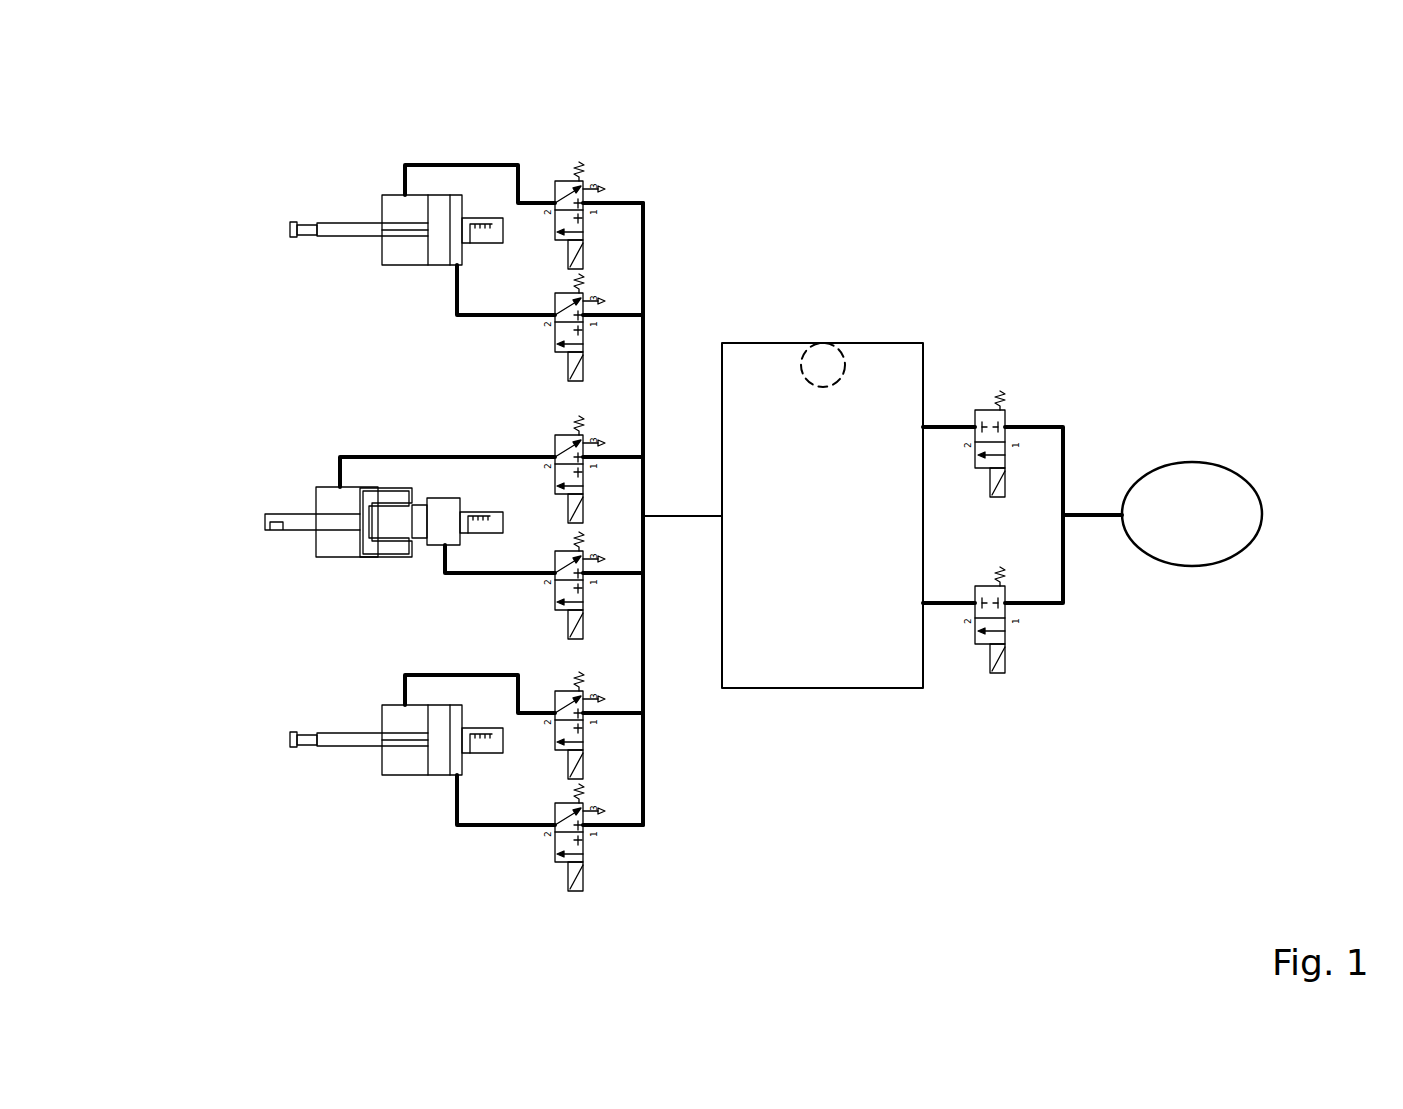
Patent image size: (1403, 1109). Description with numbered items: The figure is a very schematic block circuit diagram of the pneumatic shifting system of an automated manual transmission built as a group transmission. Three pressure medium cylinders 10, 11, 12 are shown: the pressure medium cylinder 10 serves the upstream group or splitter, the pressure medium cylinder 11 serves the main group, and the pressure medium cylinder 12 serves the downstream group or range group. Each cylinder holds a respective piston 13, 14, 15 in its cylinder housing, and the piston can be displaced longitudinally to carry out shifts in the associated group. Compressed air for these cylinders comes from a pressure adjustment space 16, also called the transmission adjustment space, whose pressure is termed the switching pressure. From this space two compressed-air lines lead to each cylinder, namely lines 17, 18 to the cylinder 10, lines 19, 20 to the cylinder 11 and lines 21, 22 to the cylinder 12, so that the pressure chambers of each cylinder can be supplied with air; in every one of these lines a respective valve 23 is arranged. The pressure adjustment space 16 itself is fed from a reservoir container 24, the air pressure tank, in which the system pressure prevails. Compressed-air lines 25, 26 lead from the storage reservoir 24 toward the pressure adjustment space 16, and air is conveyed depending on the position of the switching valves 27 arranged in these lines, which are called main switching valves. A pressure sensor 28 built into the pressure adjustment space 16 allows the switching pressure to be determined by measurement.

The pressure medium cylinder 10 is at (323, 164).
The pressure medium cylinder 11 is at (323, 509).
The pressure medium cylinder 12 is at (323, 848).
The piston 13 is at (398, 228).
The piston 14 is at (300, 521).
The piston 15 is at (400, 742).
The pressure adjustment space 16 is at (793, 667).
The compressed-air line 17 is at (627, 200).
The compressed-air line 18 is at (508, 318).
The compressed-air line 19 is at (450, 457).
The compressed-air line 20 is at (478, 575).
The compressed-air line 21 is at (622, 713).
The compressed-air line 22 is at (507, 830).
The valve 23 is at (689, 945).
The reservoir container 24 is at (1227, 532).
The compressed-air line 25 is at (1035, 425).
The compressed-air line 26 is at (1035, 606).
The switching valve 27 is at (975, 382).
The pressure sensor 28 is at (822, 368).